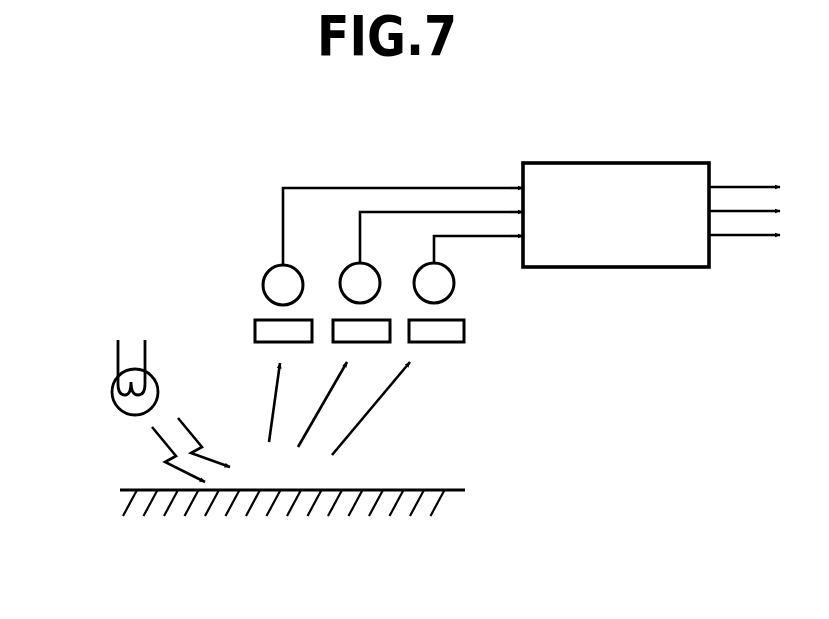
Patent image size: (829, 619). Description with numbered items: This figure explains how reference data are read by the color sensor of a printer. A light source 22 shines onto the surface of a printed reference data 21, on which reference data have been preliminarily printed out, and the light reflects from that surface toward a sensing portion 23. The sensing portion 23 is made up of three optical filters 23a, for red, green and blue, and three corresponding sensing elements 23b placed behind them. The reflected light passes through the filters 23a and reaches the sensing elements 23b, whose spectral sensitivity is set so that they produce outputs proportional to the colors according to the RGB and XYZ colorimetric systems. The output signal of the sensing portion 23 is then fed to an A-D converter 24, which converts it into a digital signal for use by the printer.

The printed reference data 21 is at (218, 522).
The light source 22 is at (112, 391).
The sensing portion 23 is at (290, 277).
The optical filters 23a is at (263, 316).
The sensing elements 23b is at (275, 267).
The A-D converter 24 is at (603, 163).